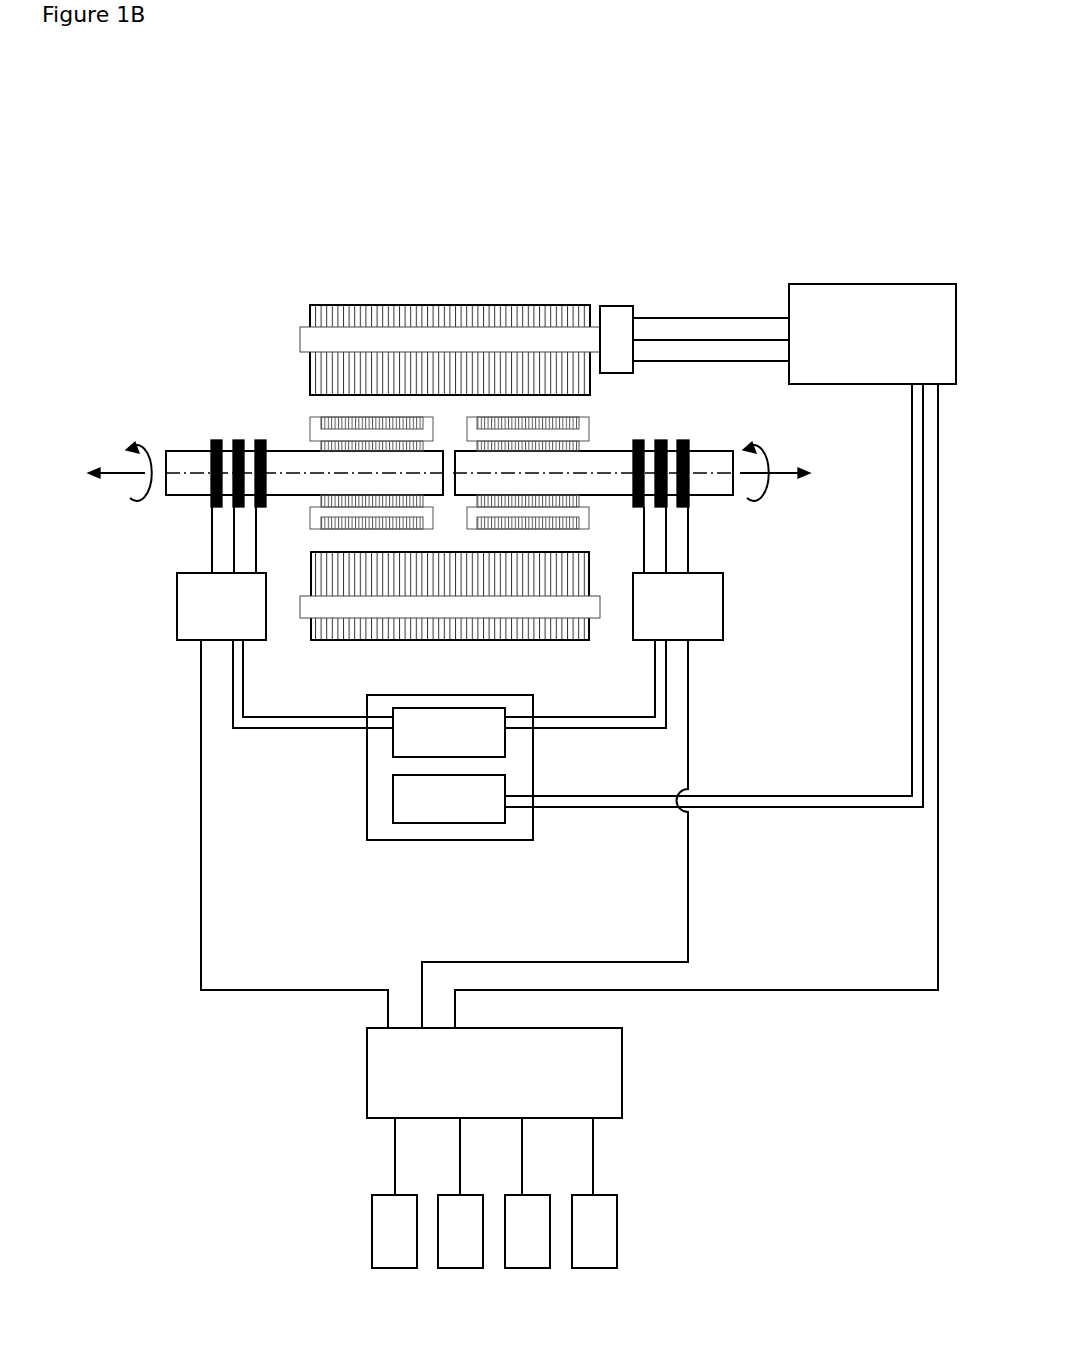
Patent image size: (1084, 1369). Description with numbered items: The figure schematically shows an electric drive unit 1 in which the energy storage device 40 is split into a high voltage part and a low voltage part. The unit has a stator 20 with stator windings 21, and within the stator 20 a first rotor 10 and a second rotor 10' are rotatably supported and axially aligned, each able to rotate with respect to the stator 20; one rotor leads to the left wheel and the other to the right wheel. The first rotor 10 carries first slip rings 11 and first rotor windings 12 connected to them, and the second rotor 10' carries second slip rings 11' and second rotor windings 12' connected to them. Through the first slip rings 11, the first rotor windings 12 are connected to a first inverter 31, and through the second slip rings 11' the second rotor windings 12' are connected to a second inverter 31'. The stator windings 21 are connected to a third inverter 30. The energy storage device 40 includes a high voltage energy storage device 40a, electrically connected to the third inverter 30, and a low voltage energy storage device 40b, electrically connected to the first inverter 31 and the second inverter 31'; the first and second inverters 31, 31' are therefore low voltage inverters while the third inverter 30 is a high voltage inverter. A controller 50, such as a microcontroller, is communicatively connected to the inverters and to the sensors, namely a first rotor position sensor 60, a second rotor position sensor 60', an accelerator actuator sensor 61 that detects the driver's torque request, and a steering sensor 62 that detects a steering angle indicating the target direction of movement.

The electric drive unit 1 is at (305, 247).
The first rotor 10 is at (245, 521).
The second rotor 10' is at (657, 530).
The first slip rings 11 is at (220, 465).
The second slip rings 11' is at (690, 483).
The first rotor windings 12 is at (344, 473).
The second rotor windings 12' is at (561, 473).
The stator 20 is at (368, 318).
The stator windings 21 is at (522, 343).
The third inverter 30 is at (815, 306).
The first inverter 31 is at (266, 800).
The second inverter 31' is at (597, 800).
The energy storage device 40 is at (429, 804).
The high voltage energy storage device 40a is at (470, 822).
The low voltage energy storage device 40b is at (412, 739).
The controller 50 is at (605, 1085).
The first rotor position sensor 60 is at (382, 1253).
The second rotor position sensor 60' is at (466, 1264).
The accelerator actuator sensor 61 is at (520, 1255).
The steering sensor 62 is at (610, 1255).